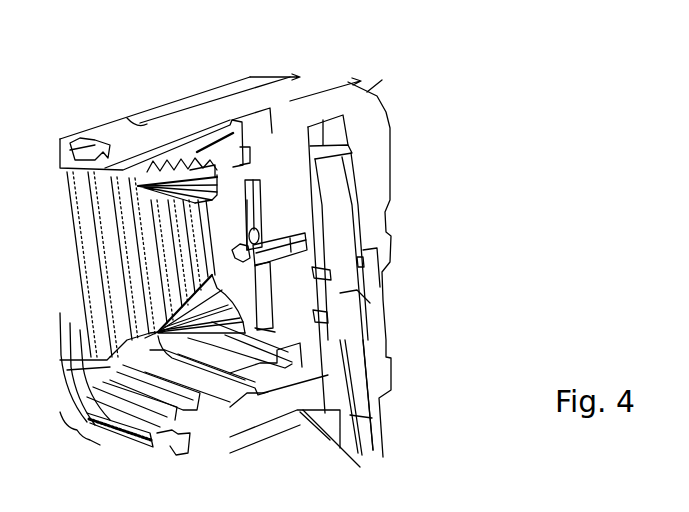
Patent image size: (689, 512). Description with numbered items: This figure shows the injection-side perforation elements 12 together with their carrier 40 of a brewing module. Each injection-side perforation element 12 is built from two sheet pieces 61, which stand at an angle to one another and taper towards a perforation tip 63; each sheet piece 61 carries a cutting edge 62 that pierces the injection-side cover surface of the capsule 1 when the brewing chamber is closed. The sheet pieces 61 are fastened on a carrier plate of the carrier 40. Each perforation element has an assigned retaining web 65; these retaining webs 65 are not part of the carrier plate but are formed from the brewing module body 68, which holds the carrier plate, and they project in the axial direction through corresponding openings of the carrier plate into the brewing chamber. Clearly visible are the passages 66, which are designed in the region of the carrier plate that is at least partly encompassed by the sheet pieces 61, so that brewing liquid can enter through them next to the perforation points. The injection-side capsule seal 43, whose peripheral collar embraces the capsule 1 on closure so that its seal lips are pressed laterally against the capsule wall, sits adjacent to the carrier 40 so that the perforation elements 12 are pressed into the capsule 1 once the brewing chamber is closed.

The injection-side perforation element 12 is at (226, 156).
The injection-side capsule seal 43 is at (117, 212).
The passage 66 is at (253, 247).
The brewing module body 68 is at (298, 210).
The carrier 40 is at (245, 287).
The retaining web 65 is at (228, 305).
The perforation tip 63 is at (152, 332).
The cutting edge 62 is at (213, 332).
The sheet piece 61 is at (217, 322).
The capsule 1 is at (612, 511).